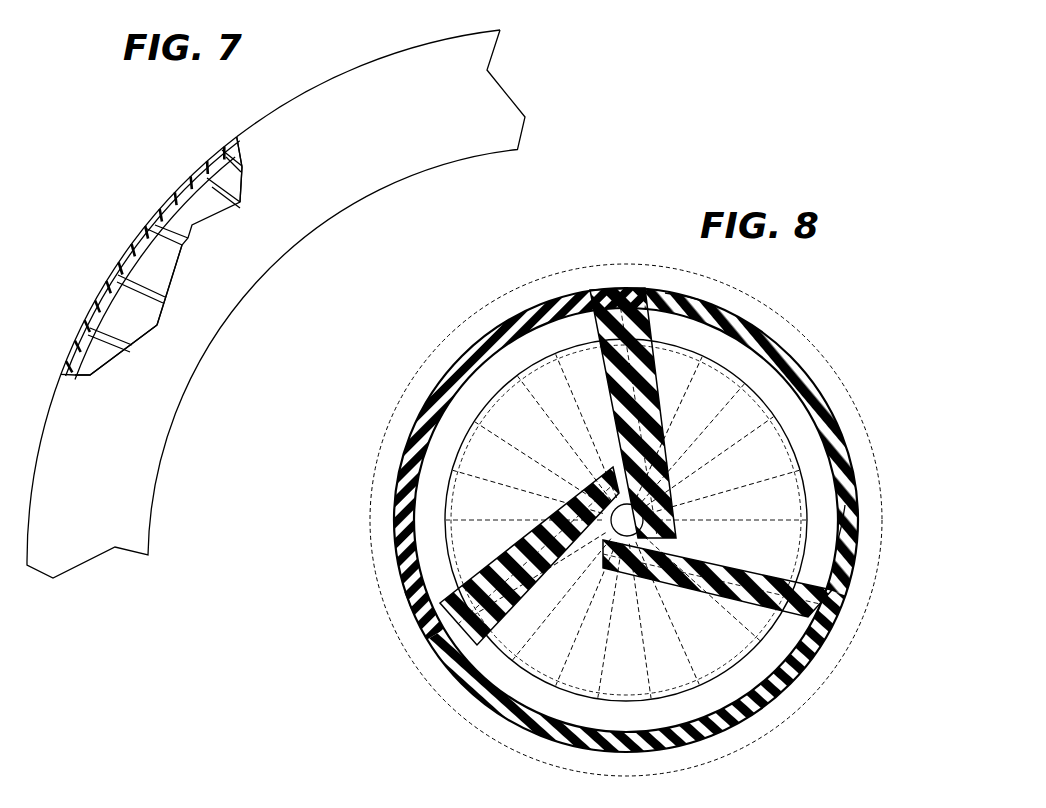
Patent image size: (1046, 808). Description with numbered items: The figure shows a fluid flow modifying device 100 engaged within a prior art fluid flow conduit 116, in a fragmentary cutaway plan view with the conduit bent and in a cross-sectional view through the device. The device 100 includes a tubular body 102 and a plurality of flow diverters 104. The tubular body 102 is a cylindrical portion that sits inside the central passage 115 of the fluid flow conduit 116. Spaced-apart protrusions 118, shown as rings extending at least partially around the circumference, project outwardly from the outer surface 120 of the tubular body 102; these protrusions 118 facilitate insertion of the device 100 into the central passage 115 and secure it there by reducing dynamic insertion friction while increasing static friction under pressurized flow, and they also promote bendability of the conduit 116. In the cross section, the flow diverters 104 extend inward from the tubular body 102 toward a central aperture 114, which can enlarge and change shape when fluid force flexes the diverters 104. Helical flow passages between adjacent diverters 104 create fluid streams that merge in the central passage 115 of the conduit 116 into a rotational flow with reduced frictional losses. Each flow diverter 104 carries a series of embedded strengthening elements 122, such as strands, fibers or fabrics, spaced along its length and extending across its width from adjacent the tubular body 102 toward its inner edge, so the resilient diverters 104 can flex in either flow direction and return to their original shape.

In FIG. 7, the fluid flow modifying device 100 is at (173, 207).
In FIG. 8, the fluid flow modifying device 100 is at (800, 311).
In FIG. 7, the tubular body 102 is at (220, 167).
In FIG. 8, the tubular body 102 is at (462, 363).
In FIG. 8, the flow diverters 104 is at (608, 397).
In FIG. 8, the central aperture 114 is at (673, 467).
In FIG. 7, the central passage 115 is at (178, 195).
In FIG. 7, the fluid flow conduit 116 is at (348, 88).
In FIG. 7, the protrusions 118 is at (93, 312).
In FIG. 7, the outer surface 120 is at (150, 263).
In FIG. 8, the embedded strengthening elements 122 is at (665, 293).